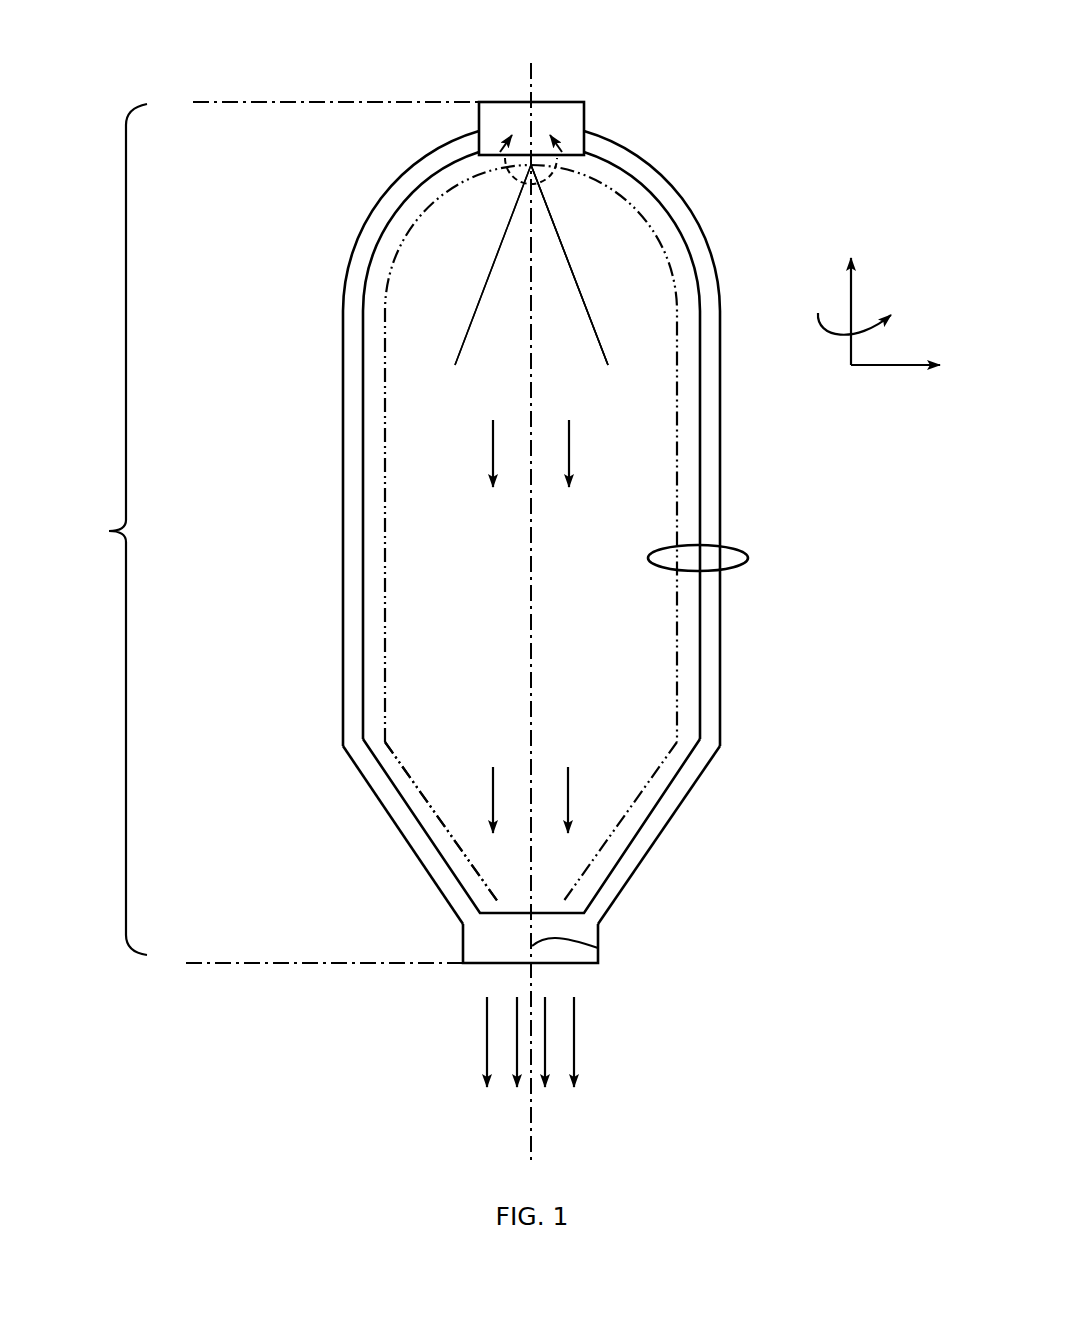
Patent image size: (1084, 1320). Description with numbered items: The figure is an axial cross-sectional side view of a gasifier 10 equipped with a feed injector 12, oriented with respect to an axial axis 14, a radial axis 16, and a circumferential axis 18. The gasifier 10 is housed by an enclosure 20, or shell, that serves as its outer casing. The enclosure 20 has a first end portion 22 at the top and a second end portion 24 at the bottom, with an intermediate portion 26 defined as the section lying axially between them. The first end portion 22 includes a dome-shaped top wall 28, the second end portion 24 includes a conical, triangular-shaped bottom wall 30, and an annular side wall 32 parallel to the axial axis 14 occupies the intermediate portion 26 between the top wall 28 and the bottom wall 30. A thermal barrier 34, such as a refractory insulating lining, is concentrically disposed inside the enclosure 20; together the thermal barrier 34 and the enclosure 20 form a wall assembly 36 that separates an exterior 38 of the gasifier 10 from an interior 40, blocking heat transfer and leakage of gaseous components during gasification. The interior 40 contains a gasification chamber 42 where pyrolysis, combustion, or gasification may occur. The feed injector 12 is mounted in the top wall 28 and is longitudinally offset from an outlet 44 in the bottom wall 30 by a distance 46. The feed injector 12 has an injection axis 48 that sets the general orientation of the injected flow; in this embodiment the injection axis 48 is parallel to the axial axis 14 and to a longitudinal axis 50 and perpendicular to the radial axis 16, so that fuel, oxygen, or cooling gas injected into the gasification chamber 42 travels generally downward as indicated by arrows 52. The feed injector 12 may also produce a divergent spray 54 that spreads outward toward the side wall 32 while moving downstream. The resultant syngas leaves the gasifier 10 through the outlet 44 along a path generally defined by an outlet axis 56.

The gasifier 10 is at (560, 42).
The feed injector 12 is at (570, 107).
The axial axis 14 is at (853, 295).
The radial axis 16 is at (897, 368).
The circumferential axis 18 is at (835, 335).
The enclosure 20 is at (725, 290).
The first end portion 22 is at (364, 183).
The second end portion 24 is at (350, 833).
The intermediate portion 26 is at (327, 502).
The top wall 28 is at (422, 162).
The bottom wall 30 is at (428, 853).
The side wall 32 is at (352, 472).
The thermal barrier 34 is at (377, 348).
The wall assembly 36 is at (738, 548).
The exterior 38 is at (815, 700).
The interior 40 is at (578, 718).
The gasification chamber 42 is at (618, 405).
The outlet 44 is at (583, 965).
The distance 46 is at (106, 529).
The injection axis 48 is at (531, 220).
The longitudinal axis 50 is at (530, 720).
The arrows 52 is at (493, 443).
The divergent spray 54 is at (477, 303).
The outlet axis 56 is at (598, 948).